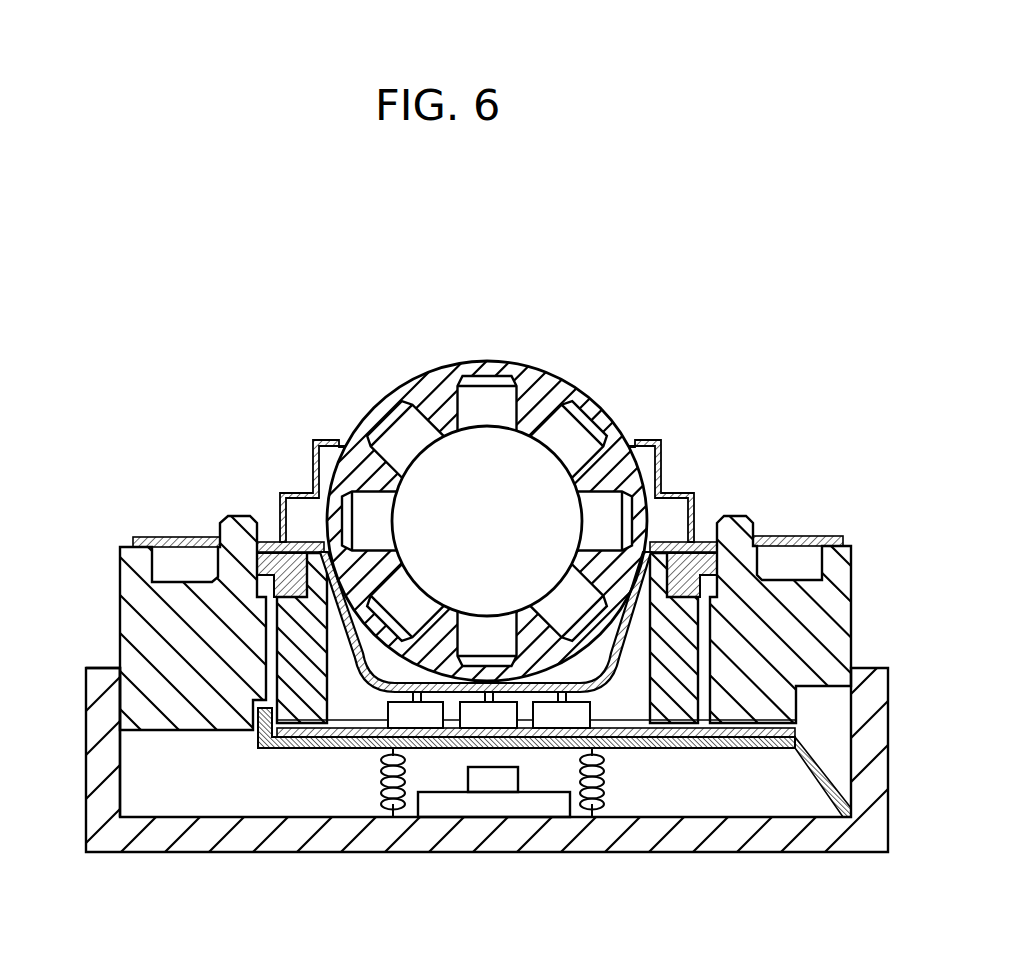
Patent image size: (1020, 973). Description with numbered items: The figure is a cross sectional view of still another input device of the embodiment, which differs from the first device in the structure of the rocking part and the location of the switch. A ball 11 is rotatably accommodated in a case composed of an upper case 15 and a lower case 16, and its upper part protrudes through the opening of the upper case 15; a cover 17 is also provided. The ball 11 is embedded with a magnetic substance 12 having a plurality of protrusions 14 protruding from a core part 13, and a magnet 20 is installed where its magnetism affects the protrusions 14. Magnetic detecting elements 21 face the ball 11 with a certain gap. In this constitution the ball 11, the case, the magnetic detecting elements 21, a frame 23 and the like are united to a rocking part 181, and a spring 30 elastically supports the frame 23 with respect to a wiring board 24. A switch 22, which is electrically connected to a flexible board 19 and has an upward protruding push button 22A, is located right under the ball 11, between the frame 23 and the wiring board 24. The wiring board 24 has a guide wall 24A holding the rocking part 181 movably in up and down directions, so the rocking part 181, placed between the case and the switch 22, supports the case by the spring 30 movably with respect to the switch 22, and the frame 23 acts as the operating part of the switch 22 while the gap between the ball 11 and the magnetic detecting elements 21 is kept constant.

The ball 11 is at (423, 390).
The magnetic substance 12 is at (541, 452).
The core part 13 is at (557, 500).
The protrusions 14 is at (573, 430).
The upper case 15 is at (670, 465).
The lower case 16 is at (800, 533).
The cover 17 is at (272, 550).
The rocking part 181 is at (198, 608).
The flexible board 19 is at (530, 715).
The magnet 20 is at (298, 712).
The magnetic detecting elements 21 is at (475, 712).
The switch 22 is at (470, 800).
The push button 22A is at (502, 779).
The frame 23 is at (628, 748).
The wiring board 24 is at (510, 754).
The guide wall 24A is at (108, 715).
The spring 30 is at (383, 790).